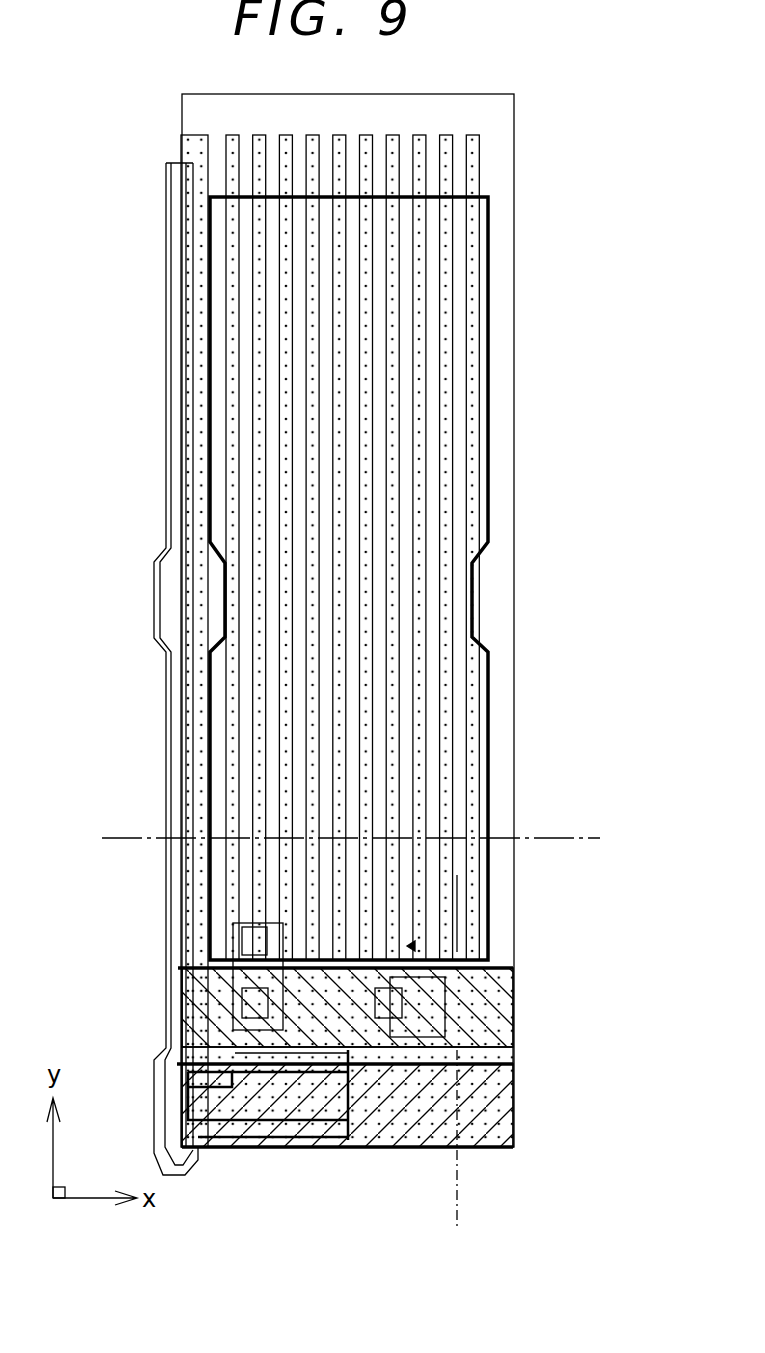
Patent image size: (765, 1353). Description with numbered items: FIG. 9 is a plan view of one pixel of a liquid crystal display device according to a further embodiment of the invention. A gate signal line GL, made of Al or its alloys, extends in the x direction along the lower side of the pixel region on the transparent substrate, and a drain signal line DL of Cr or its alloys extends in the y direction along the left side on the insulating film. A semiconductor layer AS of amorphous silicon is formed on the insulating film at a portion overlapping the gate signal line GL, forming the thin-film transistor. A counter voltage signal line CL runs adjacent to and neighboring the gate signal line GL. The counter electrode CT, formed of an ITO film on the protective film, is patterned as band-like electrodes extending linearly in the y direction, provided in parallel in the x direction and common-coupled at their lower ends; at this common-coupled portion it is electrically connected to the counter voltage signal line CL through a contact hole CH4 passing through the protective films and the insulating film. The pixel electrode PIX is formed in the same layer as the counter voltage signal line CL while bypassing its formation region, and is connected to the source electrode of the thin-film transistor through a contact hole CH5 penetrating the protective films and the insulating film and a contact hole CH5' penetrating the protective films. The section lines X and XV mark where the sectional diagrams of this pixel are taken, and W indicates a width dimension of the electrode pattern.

The drain signal line DL is at (170, 763).
The counter electrode CT is at (455, 382).
The pixel electrode PIX is at (492, 727).
The counter voltage signal line CL is at (513, 1000).
The gate signal line GL is at (513, 1105).
The contact hole CH5 is at (185, 974).
The contact hole CH5' is at (172, 993).
The contact hole CH4 is at (402, 1017).
The semiconductor layer AS is at (343, 1148).
The line X— X is at (117, 842).
The line XV— XV is at (460, 1213).
The width dimension W is at (498, 893).